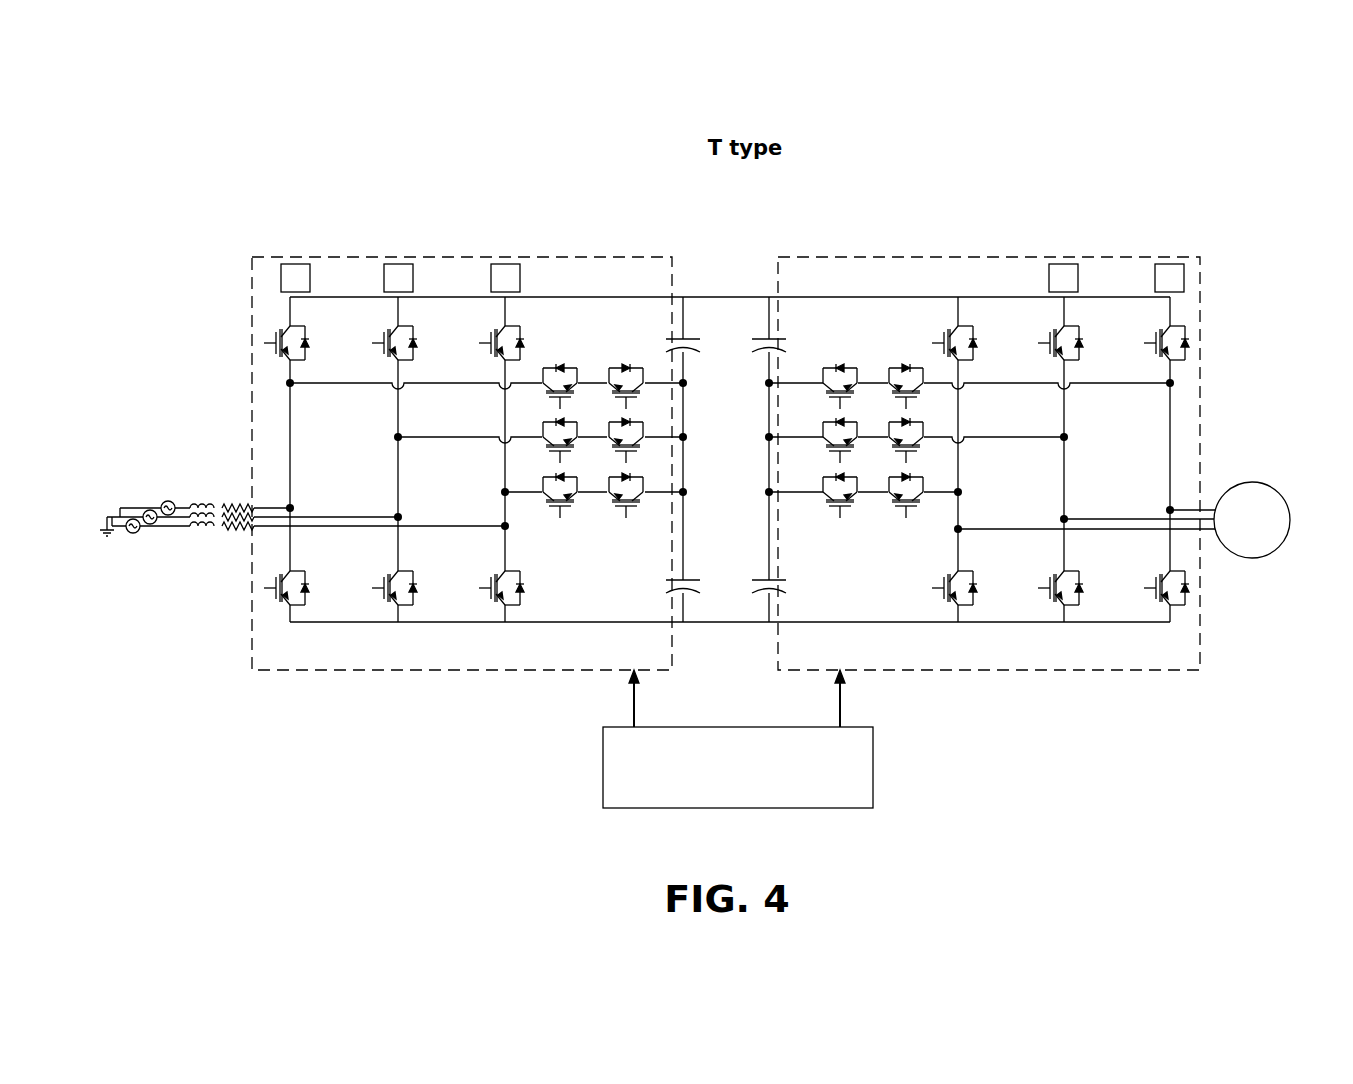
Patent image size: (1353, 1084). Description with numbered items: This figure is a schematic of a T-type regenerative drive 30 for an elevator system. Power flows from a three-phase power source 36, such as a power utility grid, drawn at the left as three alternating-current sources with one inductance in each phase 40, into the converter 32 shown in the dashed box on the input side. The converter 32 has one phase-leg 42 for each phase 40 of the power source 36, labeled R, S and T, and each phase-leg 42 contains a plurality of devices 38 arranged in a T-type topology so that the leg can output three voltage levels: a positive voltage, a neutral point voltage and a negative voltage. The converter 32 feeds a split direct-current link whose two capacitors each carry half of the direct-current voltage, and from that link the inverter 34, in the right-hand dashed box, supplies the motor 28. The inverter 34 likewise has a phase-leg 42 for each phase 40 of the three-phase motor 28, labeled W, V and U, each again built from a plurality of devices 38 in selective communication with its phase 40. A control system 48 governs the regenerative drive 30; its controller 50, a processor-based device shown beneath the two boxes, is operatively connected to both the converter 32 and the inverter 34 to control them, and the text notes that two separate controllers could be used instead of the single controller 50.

The motor 28 is at (1274, 487).
The regenerative drive 30 is at (1082, 148).
The converter 32 is at (252, 670).
The inverter 34 is at (1200, 670).
The power source 36 is at (157, 485).
The devices 38 is at (288, 358).
The phase 40 is at (183, 505).
The phase-leg 42 is at (287, 250).
The control system 48 is at (560, 753).
The controller 50 is at (815, 808).